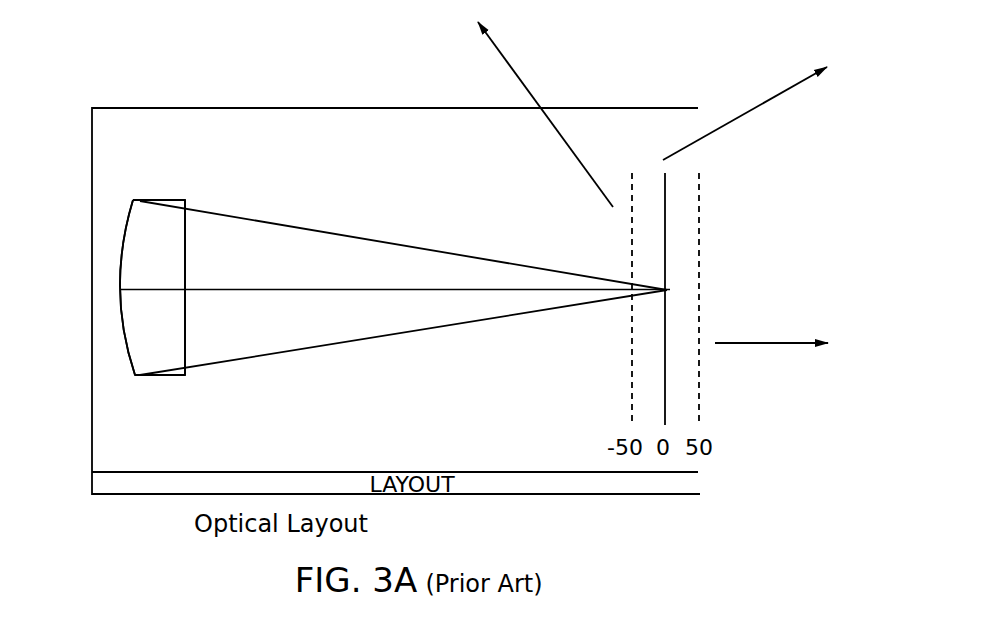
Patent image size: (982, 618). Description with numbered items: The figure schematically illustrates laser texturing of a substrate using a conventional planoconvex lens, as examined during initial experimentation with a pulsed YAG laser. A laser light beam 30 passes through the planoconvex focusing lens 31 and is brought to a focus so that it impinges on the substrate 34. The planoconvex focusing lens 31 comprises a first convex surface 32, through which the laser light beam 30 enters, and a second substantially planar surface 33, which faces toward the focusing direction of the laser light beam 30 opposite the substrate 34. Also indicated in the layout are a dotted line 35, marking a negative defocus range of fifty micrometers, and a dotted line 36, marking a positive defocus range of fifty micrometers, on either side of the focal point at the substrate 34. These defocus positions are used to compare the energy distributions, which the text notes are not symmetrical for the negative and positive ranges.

The laser light beam 30 is at (500, 318).
The planoconvex focusing lens 31 is at (170, 380).
The first convex surface 32 is at (123, 239).
The second substantially planar surface 33 is at (185, 328).
The substrate 34 is at (747, 100).
The dotted line indicating negative defocus range 35 is at (545, 108).
The dotted line indicating positive defocus range 36 is at (782, 357).